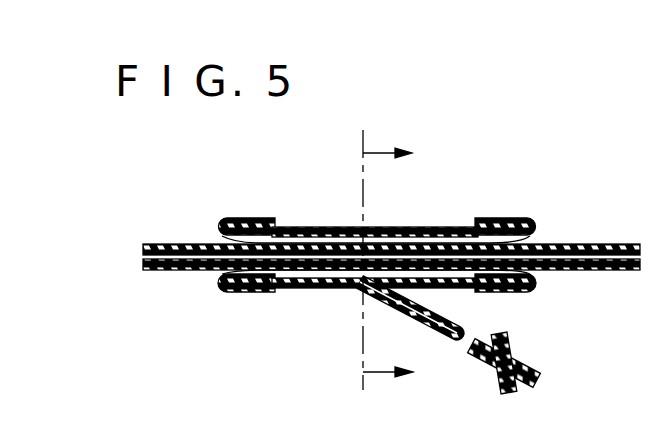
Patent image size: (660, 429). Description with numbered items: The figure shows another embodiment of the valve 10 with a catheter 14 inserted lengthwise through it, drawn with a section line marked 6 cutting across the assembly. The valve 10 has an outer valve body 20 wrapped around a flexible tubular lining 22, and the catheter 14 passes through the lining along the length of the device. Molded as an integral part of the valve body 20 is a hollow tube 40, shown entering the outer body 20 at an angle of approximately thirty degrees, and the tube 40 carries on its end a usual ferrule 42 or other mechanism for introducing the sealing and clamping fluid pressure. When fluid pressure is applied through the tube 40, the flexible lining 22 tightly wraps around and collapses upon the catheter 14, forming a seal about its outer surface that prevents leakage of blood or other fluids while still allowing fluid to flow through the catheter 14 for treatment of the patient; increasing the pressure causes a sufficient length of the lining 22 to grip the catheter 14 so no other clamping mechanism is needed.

The valve 10 is at (376, 257).
The catheter 14 is at (172, 244).
The valve body 20 is at (454, 227).
The tubular lining 22 is at (312, 244).
The hollow tube 40 is at (437, 311).
The ferrule 42 is at (518, 342).
The section line 6- 6 is at (404, 260).